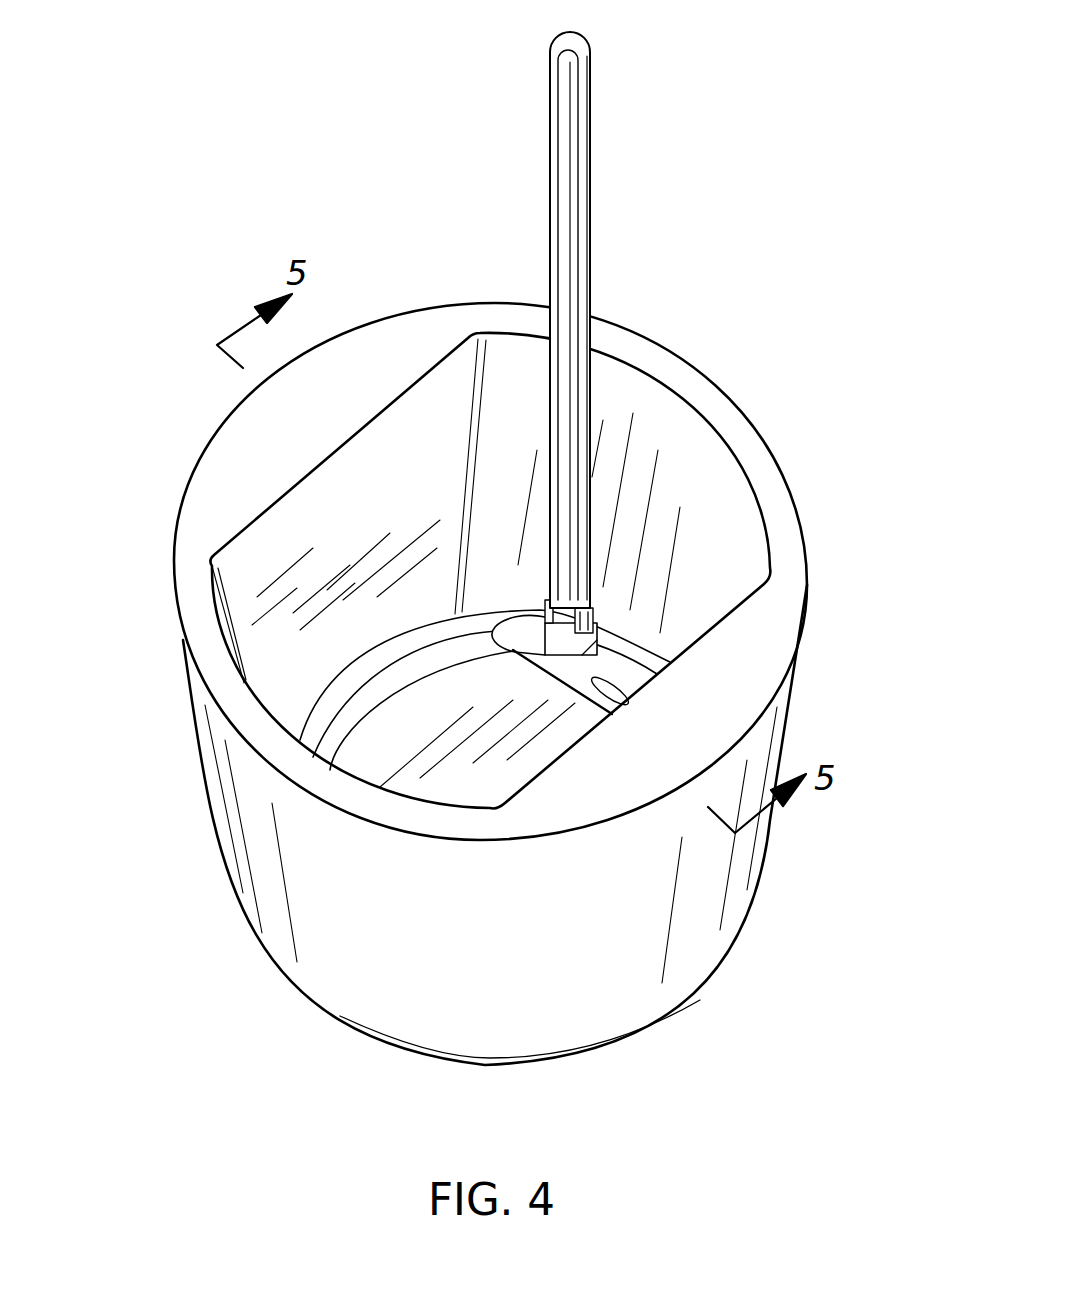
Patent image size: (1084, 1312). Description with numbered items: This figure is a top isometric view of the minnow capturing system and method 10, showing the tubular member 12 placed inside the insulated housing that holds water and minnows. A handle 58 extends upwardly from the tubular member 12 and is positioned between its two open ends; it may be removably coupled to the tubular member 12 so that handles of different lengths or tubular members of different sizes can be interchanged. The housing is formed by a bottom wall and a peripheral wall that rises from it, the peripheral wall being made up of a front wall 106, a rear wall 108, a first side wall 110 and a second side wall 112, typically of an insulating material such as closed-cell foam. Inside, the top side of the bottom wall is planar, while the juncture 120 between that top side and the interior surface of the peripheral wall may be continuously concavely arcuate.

The minnow capturing system and method 10 is at (846, 393).
The tubular member 12 is at (530, 642).
The handle 58 is at (590, 146).
The front wall 106 is at (740, 858).
The rear wall 108 is at (228, 422).
The first side wall 110 is at (700, 370).
The second side wall 112 is at (245, 830).
The juncture 120 is at (408, 655).